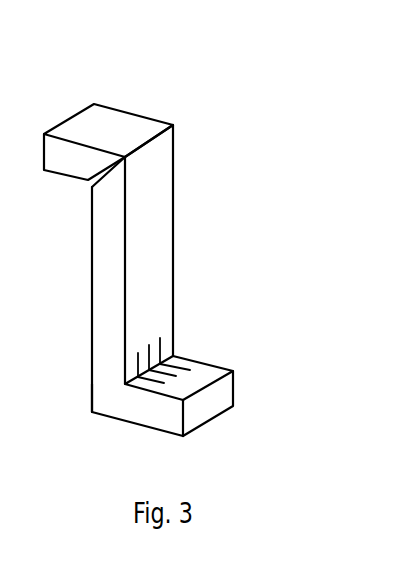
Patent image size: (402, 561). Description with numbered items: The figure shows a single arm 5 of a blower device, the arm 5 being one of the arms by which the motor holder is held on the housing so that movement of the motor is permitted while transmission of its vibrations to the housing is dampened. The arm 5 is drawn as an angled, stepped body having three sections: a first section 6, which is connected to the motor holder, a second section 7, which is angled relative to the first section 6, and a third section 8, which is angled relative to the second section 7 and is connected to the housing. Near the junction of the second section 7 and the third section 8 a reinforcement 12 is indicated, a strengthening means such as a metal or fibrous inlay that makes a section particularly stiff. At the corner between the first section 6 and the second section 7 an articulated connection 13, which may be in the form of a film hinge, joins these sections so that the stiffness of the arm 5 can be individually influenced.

The arm 5 is at (224, 126).
The first section 6 is at (113, 120).
The second section 7 is at (155, 250).
The third section 8 is at (223, 388).
The reinforcement 12 is at (171, 366).
The articulated connection 13 is at (150, 141).